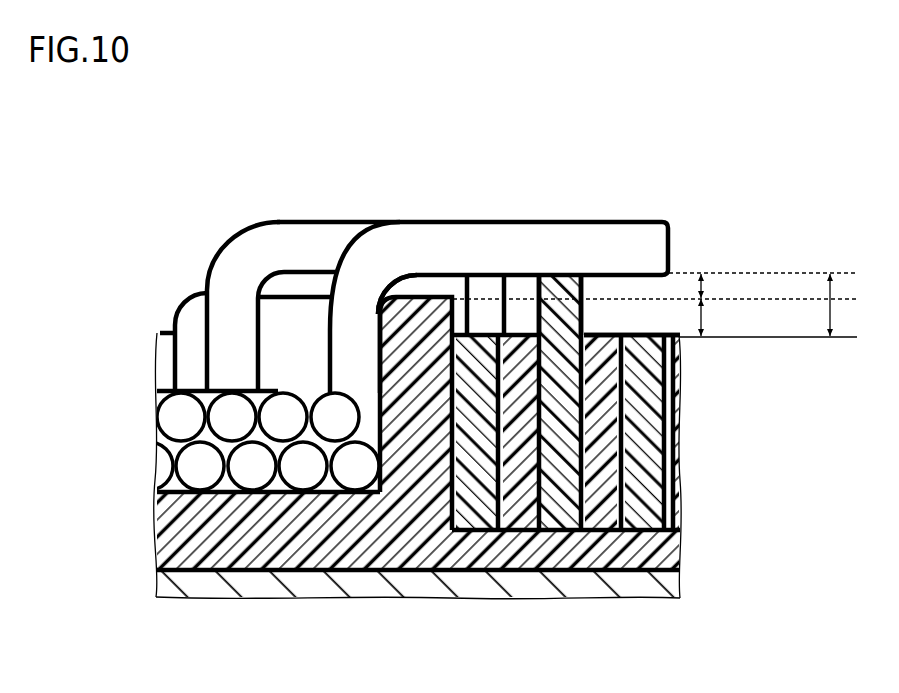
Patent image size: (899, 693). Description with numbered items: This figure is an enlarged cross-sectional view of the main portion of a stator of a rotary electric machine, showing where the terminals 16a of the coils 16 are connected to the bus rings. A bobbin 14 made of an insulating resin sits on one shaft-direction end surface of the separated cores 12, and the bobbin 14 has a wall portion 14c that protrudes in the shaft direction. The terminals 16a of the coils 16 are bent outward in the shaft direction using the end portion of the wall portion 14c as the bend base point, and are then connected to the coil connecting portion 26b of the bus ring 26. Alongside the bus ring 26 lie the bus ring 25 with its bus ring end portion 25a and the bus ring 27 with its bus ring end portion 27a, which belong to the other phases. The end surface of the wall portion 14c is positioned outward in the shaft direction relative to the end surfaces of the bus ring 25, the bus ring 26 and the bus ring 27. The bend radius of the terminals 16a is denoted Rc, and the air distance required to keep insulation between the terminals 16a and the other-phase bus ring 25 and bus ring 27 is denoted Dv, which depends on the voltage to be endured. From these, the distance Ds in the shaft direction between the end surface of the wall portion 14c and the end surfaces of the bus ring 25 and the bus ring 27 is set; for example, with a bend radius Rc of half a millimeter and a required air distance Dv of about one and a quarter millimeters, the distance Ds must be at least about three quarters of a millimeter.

The separated core 12 is at (397, 578).
The bobbin 14 is at (303, 557).
The wall portion 14c is at (390, 360).
The coil 16 is at (203, 470).
The terminal 16a is at (297, 221).
The bus ring 25 is at (478, 522).
The bus ring end portion 25a is at (479, 333).
The bus ring 26 is at (567, 522).
The coil connecting portion 26b is at (566, 292).
The bus ring 27 is at (640, 523).
The bus ring end portion 27a is at (633, 335).
The bend radius Rc is at (397, 293).
The distance Ds is at (768, 318).
The required air distance Dv is at (848, 305).